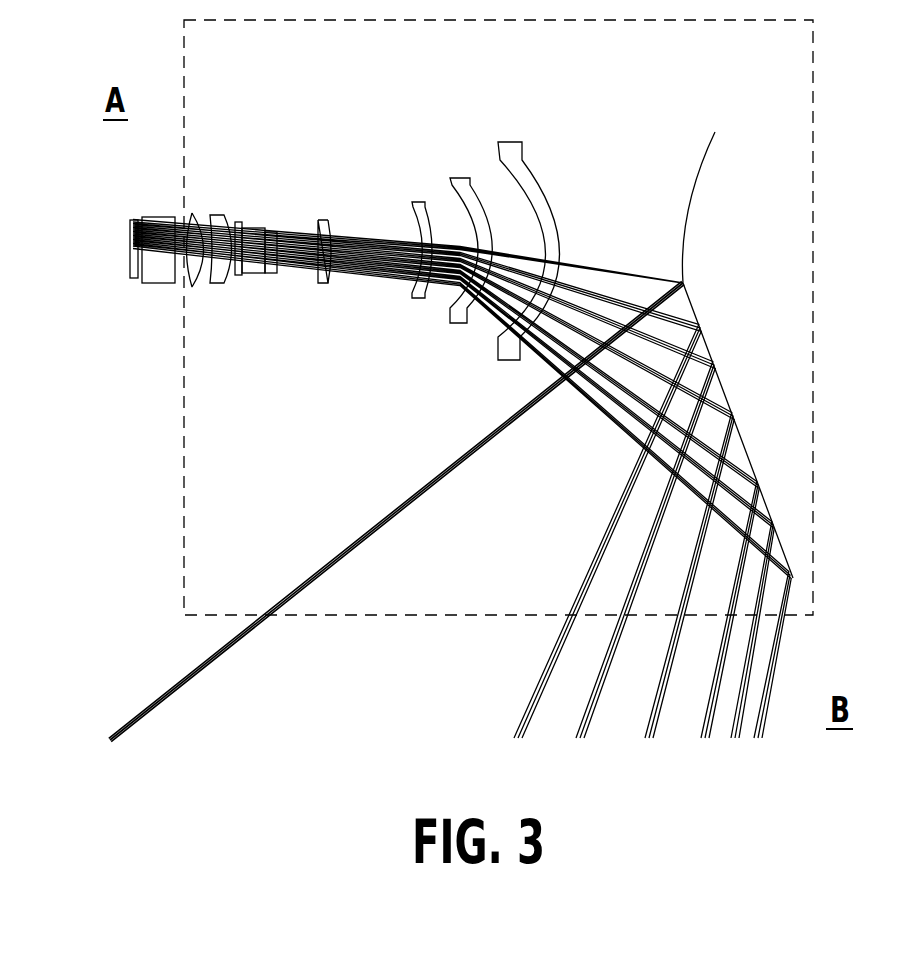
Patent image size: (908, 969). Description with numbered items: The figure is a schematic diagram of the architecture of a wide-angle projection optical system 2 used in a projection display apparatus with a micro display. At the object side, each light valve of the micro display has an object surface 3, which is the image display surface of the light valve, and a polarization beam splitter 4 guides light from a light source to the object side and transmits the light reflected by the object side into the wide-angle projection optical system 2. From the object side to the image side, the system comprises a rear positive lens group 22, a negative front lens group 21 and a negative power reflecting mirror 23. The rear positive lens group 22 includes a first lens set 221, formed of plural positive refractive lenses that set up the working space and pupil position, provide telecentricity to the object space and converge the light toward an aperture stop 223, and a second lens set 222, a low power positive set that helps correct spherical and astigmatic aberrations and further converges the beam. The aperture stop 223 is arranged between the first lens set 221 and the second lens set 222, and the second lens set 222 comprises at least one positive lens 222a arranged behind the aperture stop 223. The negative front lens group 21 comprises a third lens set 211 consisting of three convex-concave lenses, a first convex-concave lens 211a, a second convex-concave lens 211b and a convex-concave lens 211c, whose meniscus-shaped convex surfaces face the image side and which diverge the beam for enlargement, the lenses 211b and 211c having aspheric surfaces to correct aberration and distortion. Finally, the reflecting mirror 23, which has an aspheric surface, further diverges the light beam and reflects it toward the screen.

The wide-angle projection optical system 2 is at (813, 172).
The object surface 3 is at (130, 268).
The polarization beam splitter 4 is at (162, 272).
The negative front lens group 21 is at (545, 85).
The third lens set 211 is at (530, 370).
The first convex-concave lens 211a is at (417, 202).
The second convex-concave lens 211b is at (463, 183).
The convex-concave lens 211c is at (518, 160).
The rear positive lens group 22 is at (330, 130).
The first lens set 221 is at (273, 303).
The second lens set 222 is at (327, 252).
The lens 222a is at (328, 284).
The aperture stop 223 is at (277, 278).
The negative power reflecting mirror 23 is at (725, 203).